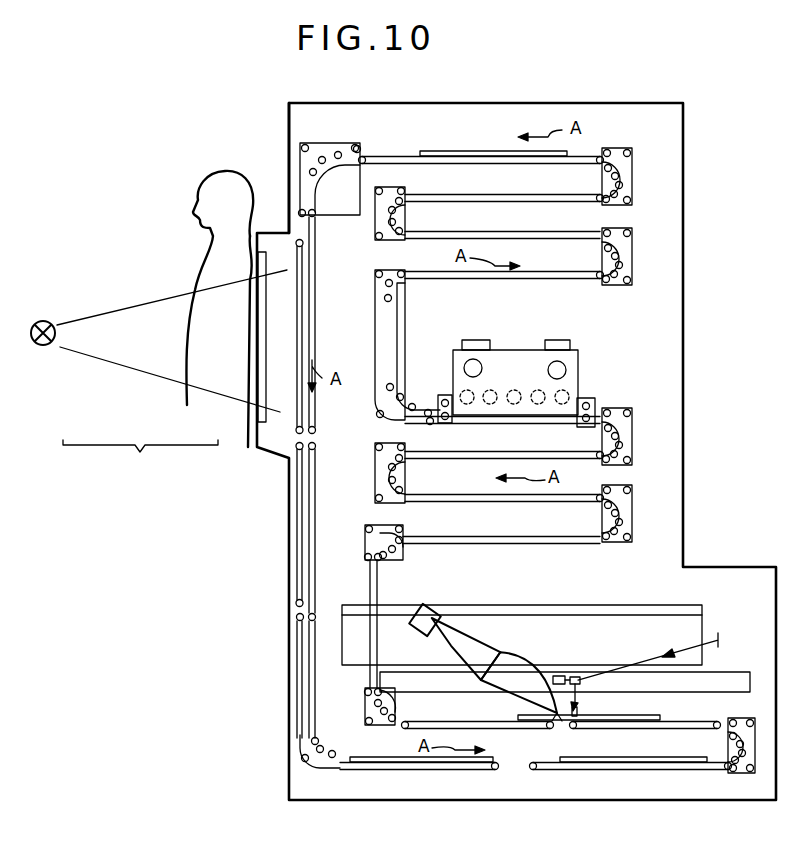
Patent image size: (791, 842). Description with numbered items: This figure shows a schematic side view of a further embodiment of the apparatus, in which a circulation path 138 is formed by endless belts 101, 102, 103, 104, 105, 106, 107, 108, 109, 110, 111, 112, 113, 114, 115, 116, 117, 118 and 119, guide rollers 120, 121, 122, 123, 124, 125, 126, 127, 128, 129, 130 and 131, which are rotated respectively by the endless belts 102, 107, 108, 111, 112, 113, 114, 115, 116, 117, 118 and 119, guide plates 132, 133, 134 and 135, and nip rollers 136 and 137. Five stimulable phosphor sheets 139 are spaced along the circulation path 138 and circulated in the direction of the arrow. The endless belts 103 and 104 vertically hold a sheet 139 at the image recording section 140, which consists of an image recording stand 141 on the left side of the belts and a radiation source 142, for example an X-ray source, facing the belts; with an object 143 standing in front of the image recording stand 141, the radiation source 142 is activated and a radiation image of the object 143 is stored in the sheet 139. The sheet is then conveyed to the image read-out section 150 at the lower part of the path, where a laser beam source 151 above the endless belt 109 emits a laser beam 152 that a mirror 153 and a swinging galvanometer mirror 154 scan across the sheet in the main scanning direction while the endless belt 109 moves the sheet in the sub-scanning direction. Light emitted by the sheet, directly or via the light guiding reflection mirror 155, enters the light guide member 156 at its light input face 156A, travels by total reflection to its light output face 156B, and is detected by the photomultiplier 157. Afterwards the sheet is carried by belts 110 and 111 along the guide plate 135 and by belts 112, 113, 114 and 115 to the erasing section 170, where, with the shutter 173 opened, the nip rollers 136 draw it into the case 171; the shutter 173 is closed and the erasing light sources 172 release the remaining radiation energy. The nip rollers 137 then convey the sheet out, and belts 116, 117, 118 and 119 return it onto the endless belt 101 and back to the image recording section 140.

The endless belt 101 is at (385, 158).
The endless belt 102 is at (289, 162).
The endless belt 103 is at (300, 328).
The endless belt 104 is at (310, 280).
The endless belt 105 is at (297, 510).
The endless belt 106 is at (310, 542).
The endless belt 107 is at (290, 683).
The endless belt 108 is at (680, 772).
The endless belt 109 is at (700, 720).
The endless belt 110 is at (468, 722).
The endless belt 111 is at (365, 712).
The endless belt 112 is at (378, 525).
The endless belt 113 is at (628, 522).
The endless belt 114 is at (378, 465).
The endless belt 115 is at (633, 430).
The endless belt 116 is at (385, 375).
The endless belt 117 is at (632, 280).
The endless belt 118 is at (500, 240).
The endless belt 119 is at (635, 183).
The guide roller 120 is at (316, 206).
The guide roller 121 is at (325, 762).
The guide roller 122 is at (728, 748).
The guide roller 123 is at (388, 703).
The guide roller 124 is at (388, 550).
The guide roller 125 is at (603, 512).
The guide roller 126 is at (398, 476).
The guide roller 127 is at (603, 434).
The guide roller 128 is at (389, 298).
The guide roller 129 is at (602, 262).
The guide roller 130 is at (402, 205).
The guide roller 131 is at (602, 170).
The guide plate 132 is at (312, 212).
The guide plate 133 is at (318, 700).
The guide plate 134 is at (500, 758).
The guide plate 135 is at (372, 588).
The nip rollers 136 is at (588, 398).
The nip rollers 137 is at (445, 424).
The circulation path 138 is at (651, 234).
The stimulable phosphor sheet 139 is at (478, 152).
The image recording section 140 is at (140, 463).
The image recording stand 141 is at (250, 388).
The radiation source 142 is at (48, 345).
The object 143 is at (200, 280).
The image read-out section 150 is at (598, 606).
The laser beam source 151 is at (562, 615).
The laser beam 152 is at (600, 668).
The mirror 153 is at (720, 633).
The galvanometer mirror 154 is at (560, 676).
The light guiding reflection mirror 155 is at (579, 711).
The light guide member 156 is at (506, 652).
The light input face 156A is at (560, 720).
The light output face 156B is at (485, 653).
The photomultiplier 157 is at (445, 658).
The erasing section 170 is at (586, 349).
The case 171 is at (505, 350).
The erasing light sources 172 is at (520, 402).
The shutter 173 is at (600, 408).